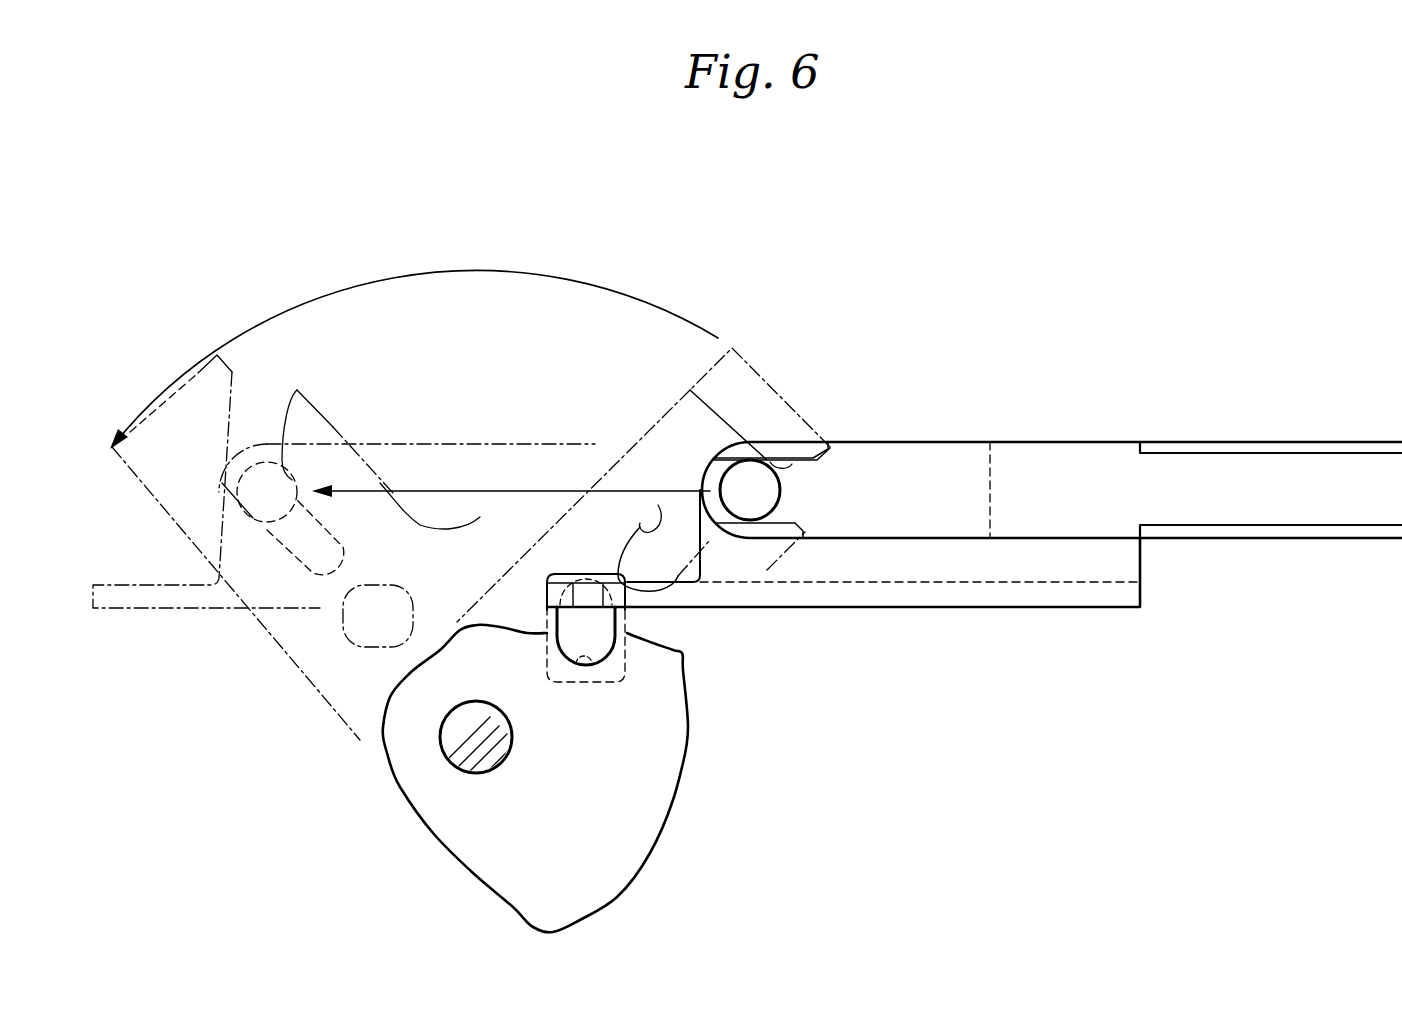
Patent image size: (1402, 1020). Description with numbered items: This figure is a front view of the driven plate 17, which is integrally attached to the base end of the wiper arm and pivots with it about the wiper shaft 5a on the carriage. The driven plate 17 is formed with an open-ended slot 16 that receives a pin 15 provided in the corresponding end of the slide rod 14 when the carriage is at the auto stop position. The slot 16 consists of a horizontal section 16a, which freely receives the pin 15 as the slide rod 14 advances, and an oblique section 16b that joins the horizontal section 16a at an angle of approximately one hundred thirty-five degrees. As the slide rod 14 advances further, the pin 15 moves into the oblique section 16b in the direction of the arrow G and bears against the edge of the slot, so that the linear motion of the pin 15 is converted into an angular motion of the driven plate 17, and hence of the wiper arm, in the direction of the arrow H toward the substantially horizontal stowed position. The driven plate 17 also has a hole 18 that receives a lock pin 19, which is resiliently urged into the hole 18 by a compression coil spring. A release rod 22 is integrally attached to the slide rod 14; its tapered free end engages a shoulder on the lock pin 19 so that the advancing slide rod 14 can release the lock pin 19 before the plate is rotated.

The slide rod 14 is at (1093, 442).
The pin 15 is at (781, 494).
The open-ended slot 16 is at (641, 318).
The horizontal section 16a is at (690, 390).
The oblique section 16b is at (658, 505).
The driven plate 17 is at (677, 780).
The hole 18 is at (584, 664).
The lock pin 19 is at (573, 625).
The release rod 22 is at (693, 600).
The wiper shaft 5a is at (447, 757).
The arrow H is at (495, 270).
The arrow G is at (473, 488).